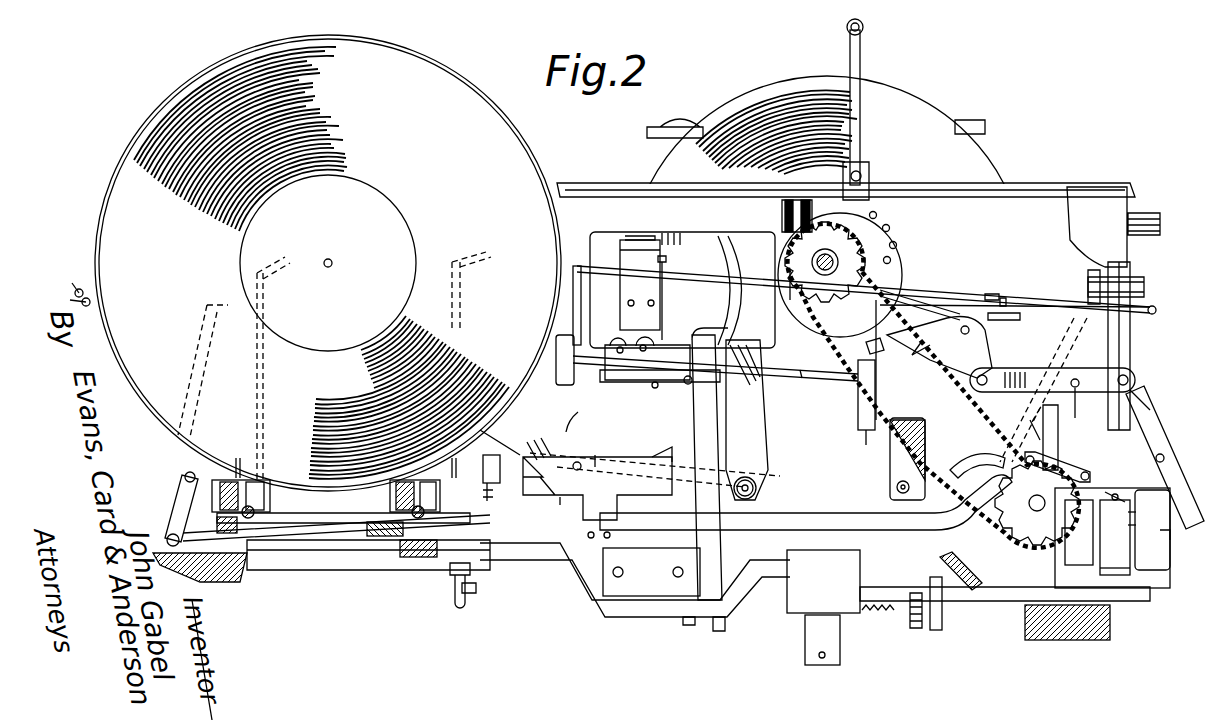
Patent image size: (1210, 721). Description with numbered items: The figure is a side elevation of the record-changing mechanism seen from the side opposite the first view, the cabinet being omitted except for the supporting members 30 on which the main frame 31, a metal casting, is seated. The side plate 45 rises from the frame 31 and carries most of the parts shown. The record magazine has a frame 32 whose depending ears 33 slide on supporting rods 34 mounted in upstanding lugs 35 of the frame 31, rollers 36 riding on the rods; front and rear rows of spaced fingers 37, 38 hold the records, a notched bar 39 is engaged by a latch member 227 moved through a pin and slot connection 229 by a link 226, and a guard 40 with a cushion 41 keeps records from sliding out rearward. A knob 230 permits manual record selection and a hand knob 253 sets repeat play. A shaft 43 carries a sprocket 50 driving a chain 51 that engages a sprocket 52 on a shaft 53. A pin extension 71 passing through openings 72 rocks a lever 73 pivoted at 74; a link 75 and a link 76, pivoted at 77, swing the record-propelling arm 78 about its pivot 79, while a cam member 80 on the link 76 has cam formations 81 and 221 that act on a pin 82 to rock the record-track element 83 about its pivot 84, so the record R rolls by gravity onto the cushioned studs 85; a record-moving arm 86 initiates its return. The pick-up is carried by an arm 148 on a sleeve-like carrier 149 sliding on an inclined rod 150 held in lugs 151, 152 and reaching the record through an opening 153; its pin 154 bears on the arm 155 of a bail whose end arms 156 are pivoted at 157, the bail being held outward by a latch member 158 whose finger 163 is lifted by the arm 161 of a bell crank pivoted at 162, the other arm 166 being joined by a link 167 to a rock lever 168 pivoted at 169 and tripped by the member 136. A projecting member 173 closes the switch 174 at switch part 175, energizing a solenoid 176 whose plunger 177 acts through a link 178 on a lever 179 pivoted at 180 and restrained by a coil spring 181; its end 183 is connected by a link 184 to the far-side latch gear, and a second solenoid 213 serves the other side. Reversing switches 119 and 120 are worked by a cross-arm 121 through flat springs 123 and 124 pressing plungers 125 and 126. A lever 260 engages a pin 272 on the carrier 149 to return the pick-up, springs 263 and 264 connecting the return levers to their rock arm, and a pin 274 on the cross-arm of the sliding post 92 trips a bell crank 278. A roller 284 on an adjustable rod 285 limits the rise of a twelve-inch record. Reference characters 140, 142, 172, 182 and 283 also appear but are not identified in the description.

The record R is at (520, 126).
The roller 284 is at (863, 27).
The rod 285 is at (860, 62).
The knob or hand wheel 230 is at (690, 120).
The hand knob 253 is at (985, 125).
The side plate 45 is at (1053, 176).
The solenoid 213 is at (1160, 220).
The electric switch 174 is at (812, 212).
The opening 153 is at (712, 236).
The arm 155 is at (712, 275).
The box 142 is at (622, 245).
The projecting member 173 is at (658, 260).
The shaft 43 is at (825, 249).
The extension or finger 163 is at (912, 288).
The rod 182 is at (921, 304).
The coil spring 181 is at (984, 298).
The pivot 180 is at (1008, 288).
The lever 179 is at (1035, 307).
The plunger 177 is at (1135, 277).
The solenoid 176 is at (1144, 287).
The link 184 is at (1154, 306).
The link 178 is at (1130, 318).
The end arms 156 is at (581, 300).
The lug or ear 151 is at (556, 368).
The pin 154 is at (660, 316).
The sprocket 50 is at (853, 300).
The switch part 175 is at (790, 300).
The latch member 158 is at (945, 318).
The pivot 162 is at (969, 330).
The arm 166 is at (980, 347).
The link 167 is at (1025, 378).
The end 183 is at (1052, 390).
The rock lever 168 is at (1145, 397).
The arm 148 is at (630, 336).
The block 172 is at (880, 346).
The arm 161 is at (915, 358).
The chain 51 is at (830, 372).
The rod 150 is at (802, 378).
The lug or ear 152 is at (858, 408).
The sleeve-like member 149 is at (618, 382).
The pin 283 is at (653, 388).
The pin 272 is at (688, 384).
The bell crank 278 is at (762, 398).
The pivot 157 is at (568, 432).
The pin 82 is at (544, 442).
The pivot 84 is at (578, 462).
The record-track element 83 is at (596, 455).
The cam formation 221 is at (660, 457).
The supporting studs 85 is at (753, 482).
The record-moving arm 86 is at (1036, 410).
The pivot 74 is at (1079, 383).
The pin extension 71 is at (1078, 410).
The openings 72 is at (1048, 425).
The lever 73 is at (1044, 440).
The link 75 is at (1095, 462).
The pivot 169 is at (1162, 440).
The electric switch 119 is at (1126, 482).
The cross-arm 121 is at (1116, 488).
The electric switch 120 is at (1150, 490).
The member 136 is at (1147, 511).
The plunger 125 is at (1147, 525).
The plunger 126 is at (1078, 532).
The flat spring member 123 is at (1115, 537).
The flat spring member 124 is at (1115, 557).
The wire 140 is at (1170, 540).
The shaft 53 is at (1037, 503).
The sprocket 52 is at (1020, 540).
The pin 274 is at (750, 497).
The lever 260 is at (697, 508).
The link 76 is at (640, 548).
The spring 263 is at (725, 622).
The post 92 is at (840, 652).
The spring 264 is at (880, 612).
The main supporting frame 31 is at (348, 563).
The supporting members 30 is at (236, 582).
The depending ears 33 is at (292, 548).
The supporting rods 34 is at (285, 523).
The frame 32 is at (270, 496).
The upstanding ears or lugs 35 is at (238, 458).
The rollers or wheels 36 is at (454, 458).
The notched bar 39 is at (500, 476).
The latch member 227 is at (494, 498).
The cam formation 81 is at (597, 488).
The cam member 80 is at (561, 506).
The pin and slot connection 229 is at (450, 590).
The link 226 is at (476, 588).
The record-propelling arm 78 is at (184, 462).
The pivot 77 is at (182, 476).
The pivot 79 is at (180, 542).
The rear row of spaced fingers 38 is at (265, 297).
The front row of spaced fingers 37 is at (451, 293).
The cushion 41 is at (83, 290).
The guard 40 is at (76, 300).